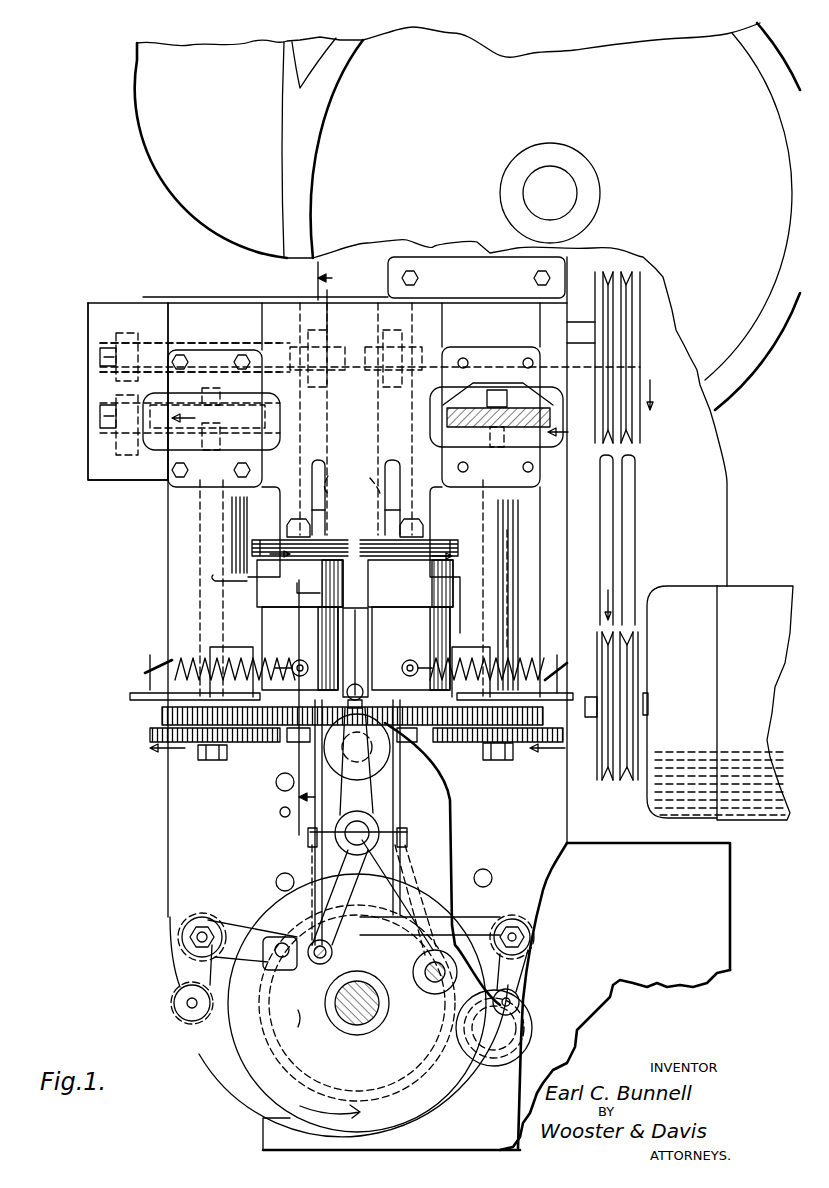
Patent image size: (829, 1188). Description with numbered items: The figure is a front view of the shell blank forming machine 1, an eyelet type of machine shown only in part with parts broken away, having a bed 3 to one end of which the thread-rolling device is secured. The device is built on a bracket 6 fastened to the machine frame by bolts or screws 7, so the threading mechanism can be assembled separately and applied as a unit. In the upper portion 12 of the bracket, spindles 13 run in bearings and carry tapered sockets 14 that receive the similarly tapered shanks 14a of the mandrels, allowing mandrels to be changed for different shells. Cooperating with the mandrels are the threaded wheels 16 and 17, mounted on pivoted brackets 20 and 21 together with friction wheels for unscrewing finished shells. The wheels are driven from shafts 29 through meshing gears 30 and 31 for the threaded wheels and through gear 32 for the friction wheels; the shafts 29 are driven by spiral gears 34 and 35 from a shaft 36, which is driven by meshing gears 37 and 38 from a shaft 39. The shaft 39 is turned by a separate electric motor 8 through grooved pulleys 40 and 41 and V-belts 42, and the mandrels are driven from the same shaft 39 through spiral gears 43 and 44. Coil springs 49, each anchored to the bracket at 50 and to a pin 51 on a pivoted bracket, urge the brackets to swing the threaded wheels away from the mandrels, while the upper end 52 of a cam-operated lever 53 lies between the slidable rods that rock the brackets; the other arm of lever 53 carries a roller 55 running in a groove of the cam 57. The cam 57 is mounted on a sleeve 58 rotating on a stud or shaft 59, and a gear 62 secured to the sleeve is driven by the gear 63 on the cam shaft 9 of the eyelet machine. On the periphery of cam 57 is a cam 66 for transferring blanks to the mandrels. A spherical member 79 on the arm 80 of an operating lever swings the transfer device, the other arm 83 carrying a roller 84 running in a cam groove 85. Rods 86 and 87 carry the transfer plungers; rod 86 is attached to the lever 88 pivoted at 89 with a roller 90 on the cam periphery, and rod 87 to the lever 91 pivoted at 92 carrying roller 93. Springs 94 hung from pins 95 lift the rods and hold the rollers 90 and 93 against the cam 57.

The shell blank forming machine 1 is at (180, 217).
The bed 3 is at (319, 548).
The bracket 6 is at (168, 825).
The bolts or screws 7 is at (420, 278).
The electric motor 8 is at (745, 588).
The cam shaft 9 is at (524, 1028).
The upper portion of the bracket 12 is at (280, 305).
The spindles 13 is at (366, 462).
The tapered sockets 14 is at (380, 488).
The tapered shanks 14a is at (385, 510).
The threaded wheel 16 is at (262, 540).
The threaded wheel 17 is at (440, 540).
The pivoted bracket 20 is at (233, 598).
The pivoted bracket 21 is at (470, 603).
The shafts 29 is at (200, 540).
The gear 30 is at (160, 717).
The gear 31 is at (300, 704).
The gear 32 is at (250, 748).
The spiral gear 34 is at (222, 400).
The spiral gear 35 is at (248, 412).
The shaft 36 is at (436, 405).
The gear 37 is at (126, 335).
The gear 38 is at (100, 405).
The shaft 39 is at (210, 342).
The grooved pulley 40 is at (640, 650).
The grooved pulley 41 is at (630, 324).
The V-belts 42 is at (608, 498).
The spiral gear 43 is at (320, 333).
The spiral gear 44 is at (334, 348).
The coil springs 49 is at (210, 655).
The spring anchorage 50 is at (148, 668).
The pin 51 is at (294, 660).
The upper end of cam-operated lever 52 is at (380, 628).
The cam-operated lever 53 is at (452, 798).
The roller 55 is at (432, 995).
The cam 57 is at (430, 1117).
The sleeve 58 is at (378, 1033).
The stud or shaft 59 is at (350, 1030).
The gear 62 is at (345, 1095).
The gear 63 is at (532, 1012).
The cam 66 is at (236, 1083).
The spherical member 79 is at (355, 683).
The arm 80 is at (388, 778).
The arm 83 is at (335, 898).
The roller 84 is at (272, 962).
The cam groove 85 is at (298, 1027).
The rod 86 is at (317, 820).
The rod 87 is at (380, 828).
The lever 88 is at (240, 935).
The pivot 89 is at (202, 925).
The roller 90 is at (185, 1022).
The lever 91 is at (490, 915).
The pivot 92 is at (532, 920).
The roller 93 is at (520, 990).
The springs 94 is at (308, 880).
The pins 95 is at (306, 838).